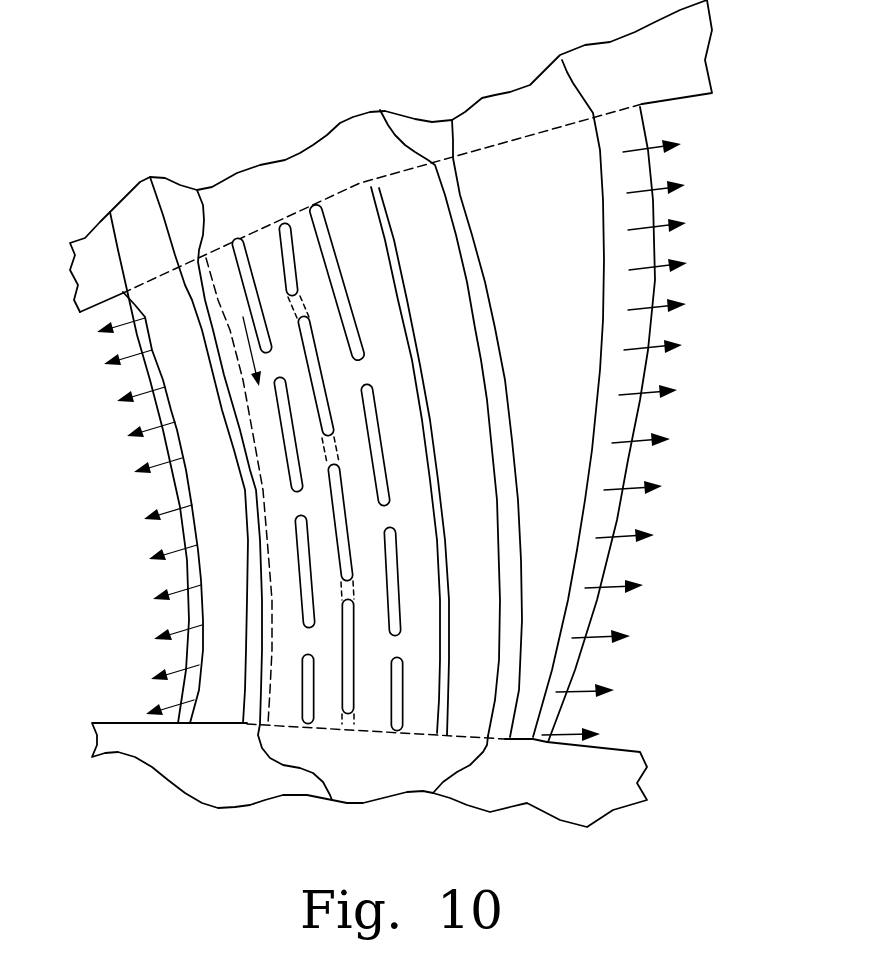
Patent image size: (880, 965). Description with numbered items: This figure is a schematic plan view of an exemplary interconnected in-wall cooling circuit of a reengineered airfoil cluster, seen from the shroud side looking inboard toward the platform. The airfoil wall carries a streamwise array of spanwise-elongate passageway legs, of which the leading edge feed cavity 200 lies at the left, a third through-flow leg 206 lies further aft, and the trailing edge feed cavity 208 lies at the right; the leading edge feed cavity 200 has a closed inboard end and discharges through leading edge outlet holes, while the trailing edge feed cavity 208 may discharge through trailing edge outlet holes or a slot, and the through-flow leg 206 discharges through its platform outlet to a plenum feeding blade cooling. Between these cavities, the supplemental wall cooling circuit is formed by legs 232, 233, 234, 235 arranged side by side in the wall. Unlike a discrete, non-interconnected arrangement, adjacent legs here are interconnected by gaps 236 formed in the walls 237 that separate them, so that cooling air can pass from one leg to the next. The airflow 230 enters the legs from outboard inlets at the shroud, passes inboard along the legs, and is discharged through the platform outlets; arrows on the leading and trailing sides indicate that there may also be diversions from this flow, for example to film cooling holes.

The leading edge feed cavity 200 is at (167, 313).
The third through-flow leg 206 is at (420, 234).
The trailing edge feed cavity 208 is at (578, 173).
The airflow 230 is at (253, 348).
The leg 232 is at (218, 268).
The leg 233 is at (255, 253).
The leg 234 is at (300, 241).
The leg 235 is at (341, 231).
The gap 236 is at (303, 302).
The wall 237 is at (337, 384).